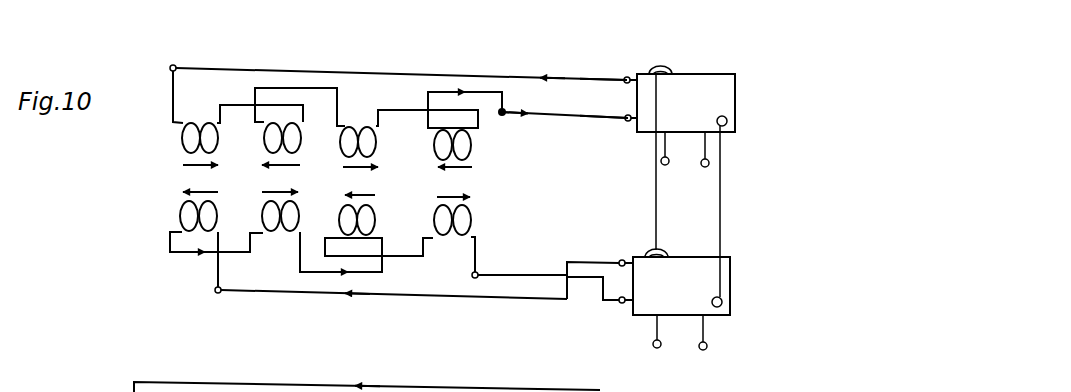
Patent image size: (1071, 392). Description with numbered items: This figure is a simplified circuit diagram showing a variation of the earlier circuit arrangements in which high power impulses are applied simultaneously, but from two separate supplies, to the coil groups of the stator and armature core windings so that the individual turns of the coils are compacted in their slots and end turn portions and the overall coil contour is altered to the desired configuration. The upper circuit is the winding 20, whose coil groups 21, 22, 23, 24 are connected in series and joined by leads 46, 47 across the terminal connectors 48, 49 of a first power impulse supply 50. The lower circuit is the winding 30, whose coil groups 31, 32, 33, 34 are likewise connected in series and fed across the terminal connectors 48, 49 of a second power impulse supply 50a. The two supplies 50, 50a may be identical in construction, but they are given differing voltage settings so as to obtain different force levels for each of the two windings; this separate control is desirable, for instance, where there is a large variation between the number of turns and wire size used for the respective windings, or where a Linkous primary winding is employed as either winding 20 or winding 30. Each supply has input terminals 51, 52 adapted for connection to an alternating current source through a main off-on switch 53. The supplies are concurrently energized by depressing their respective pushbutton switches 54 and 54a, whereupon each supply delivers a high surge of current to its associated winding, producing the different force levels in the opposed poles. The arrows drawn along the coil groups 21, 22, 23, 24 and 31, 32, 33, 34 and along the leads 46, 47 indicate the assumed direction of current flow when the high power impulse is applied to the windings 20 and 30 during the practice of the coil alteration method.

The winding 20 is at (170, 138).
The coil group of winding 20 21 is at (200, 122).
The coil group of winding 20 22 is at (286, 122).
The coil group of winding 20 23 is at (362, 125).
The coil group of winding 20 24 is at (441, 131).
The winding 30 is at (167, 241).
The coil group of winding 30 31 is at (195, 233).
The coil group of winding 30 32 is at (282, 237).
The coil group of winding 30 33 is at (357, 237).
The coil group of winding 30 34 is at (455, 240).
The lead 46 is at (594, 78).
The lead 47 is at (593, 120).
The terminal connector 48 is at (627, 76).
The terminal connector 49 is at (628, 122).
The power impulse supply 50 is at (710, 78).
The power impulse supply 50a is at (732, 272).
The input terminal 51 is at (667, 165).
The input terminal 52 is at (705, 167).
The main off-on switch 53 is at (727, 121).
The pushbutton switch 54 is at (661, 70).
The pushbutton switch 54a is at (660, 251).